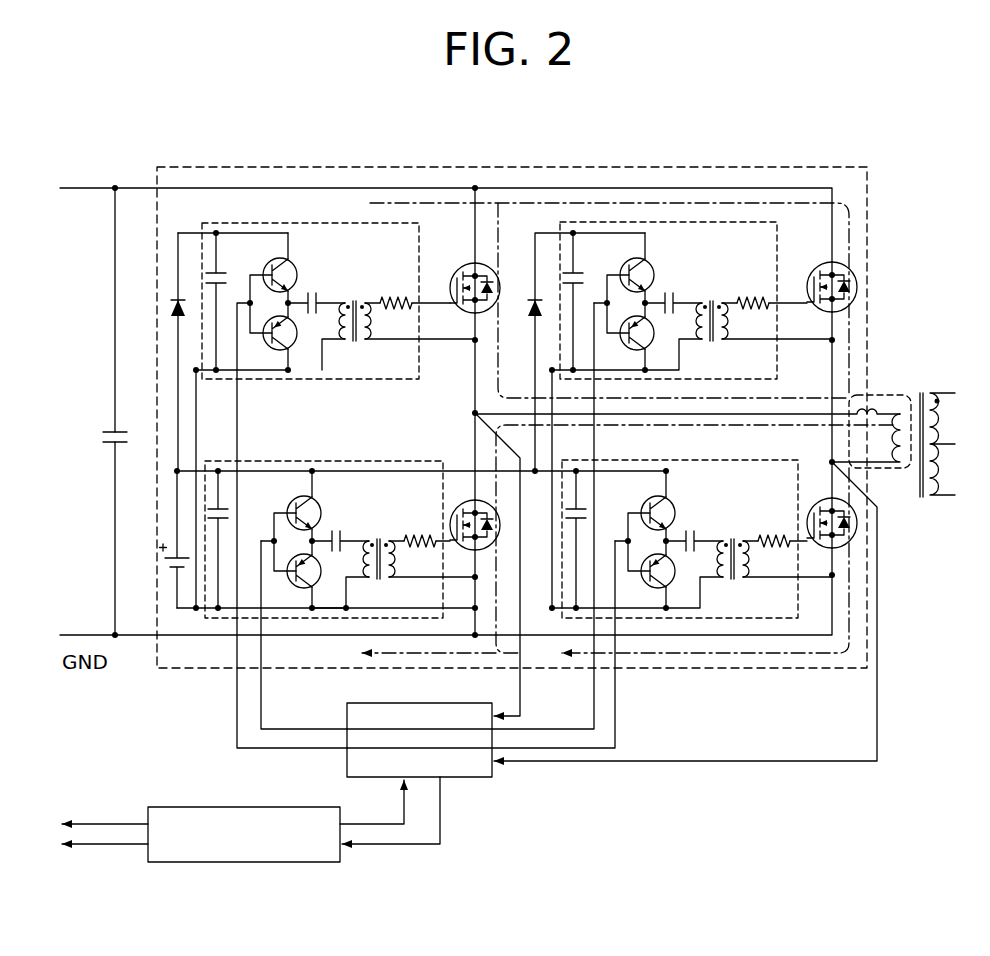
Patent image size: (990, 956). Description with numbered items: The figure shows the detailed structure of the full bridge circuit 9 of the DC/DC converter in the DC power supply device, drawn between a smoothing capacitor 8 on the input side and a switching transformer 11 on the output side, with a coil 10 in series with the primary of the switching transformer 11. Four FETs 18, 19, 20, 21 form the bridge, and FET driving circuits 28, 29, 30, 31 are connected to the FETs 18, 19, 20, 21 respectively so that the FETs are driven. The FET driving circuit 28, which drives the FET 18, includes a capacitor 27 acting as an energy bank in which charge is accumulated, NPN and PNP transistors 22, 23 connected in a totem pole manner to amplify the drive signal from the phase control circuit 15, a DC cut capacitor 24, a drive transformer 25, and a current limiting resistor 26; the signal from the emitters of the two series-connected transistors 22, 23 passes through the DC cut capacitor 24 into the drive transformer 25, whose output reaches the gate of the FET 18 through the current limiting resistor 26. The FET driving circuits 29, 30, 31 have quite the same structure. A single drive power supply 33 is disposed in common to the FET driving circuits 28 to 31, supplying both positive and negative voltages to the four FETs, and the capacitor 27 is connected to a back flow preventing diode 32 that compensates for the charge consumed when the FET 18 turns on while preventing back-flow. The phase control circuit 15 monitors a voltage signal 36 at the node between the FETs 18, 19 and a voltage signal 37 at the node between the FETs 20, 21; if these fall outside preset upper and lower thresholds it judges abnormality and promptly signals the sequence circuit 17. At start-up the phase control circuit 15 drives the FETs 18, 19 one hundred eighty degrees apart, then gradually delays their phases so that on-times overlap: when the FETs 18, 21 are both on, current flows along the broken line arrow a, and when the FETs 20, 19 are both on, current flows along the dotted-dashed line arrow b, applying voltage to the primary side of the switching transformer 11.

The smoothing capacitor 8 is at (125, 427).
The full bridge circuit 9 is at (602, 167).
The resonance coil 10 is at (868, 408).
The switching transformer 11 is at (950, 497).
The phase control circuit 15 is at (463, 780).
The sequence circuit 17 is at (370, 862).
The FET 18 is at (478, 262).
The FET 19 is at (492, 543).
The FET 20 is at (840, 266).
The FET 21 is at (843, 540).
The NPN transistor 22 is at (283, 258).
The PNP transistor 23 is at (300, 322).
The DC cut capacitor 24 is at (313, 291).
The drive transformer 25 is at (355, 300).
The current limiting resistor 26 is at (413, 296).
The capacitor 27 is at (218, 268).
The FET driving circuit 28 is at (268, 223).
The FET driving circuit 29 is at (228, 620).
The FET driving circuit 30 is at (668, 222).
The FET driving circuit 31 is at (812, 620).
The back flow preventing diode 32 is at (180, 296).
The drive power supply 33 is at (176, 571).
The voltage signal 36 is at (523, 692).
The voltage signal 37 is at (707, 761).
The broken line arrow a is at (852, 632).
The dotted-dashed line arrow b is at (856, 322).